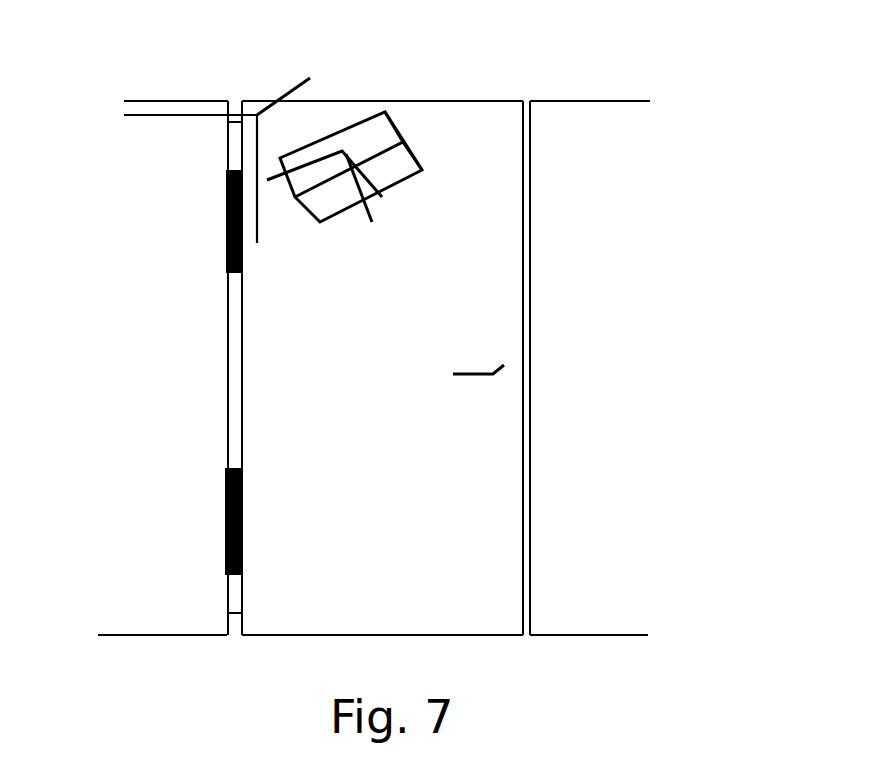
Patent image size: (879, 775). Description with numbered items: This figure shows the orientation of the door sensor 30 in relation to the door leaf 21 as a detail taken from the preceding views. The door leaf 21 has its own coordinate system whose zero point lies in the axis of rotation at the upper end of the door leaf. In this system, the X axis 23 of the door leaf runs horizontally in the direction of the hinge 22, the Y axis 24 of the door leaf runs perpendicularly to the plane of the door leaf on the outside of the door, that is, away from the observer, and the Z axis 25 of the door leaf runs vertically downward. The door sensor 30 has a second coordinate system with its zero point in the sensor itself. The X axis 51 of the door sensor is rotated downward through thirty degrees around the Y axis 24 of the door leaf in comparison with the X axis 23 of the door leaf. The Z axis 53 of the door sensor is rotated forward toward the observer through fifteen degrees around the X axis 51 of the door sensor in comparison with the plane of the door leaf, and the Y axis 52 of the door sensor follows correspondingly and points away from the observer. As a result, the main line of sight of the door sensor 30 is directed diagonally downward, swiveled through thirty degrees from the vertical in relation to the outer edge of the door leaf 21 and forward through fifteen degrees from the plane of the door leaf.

The door leaf 21 is at (467, 313).
The hinge 22 is at (224, 527).
The X axis of the door leaf 23 is at (172, 117).
The Y axis of the door leaf 24 is at (282, 98).
The Z axis of the door leaf 25 is at (255, 157).
The door sensor 30 is at (435, 111).
The X axis of the door sensor 51 is at (315, 157).
The Y axis of the door sensor 52 is at (367, 173).
The Z axis of the door sensor 53 is at (367, 213).